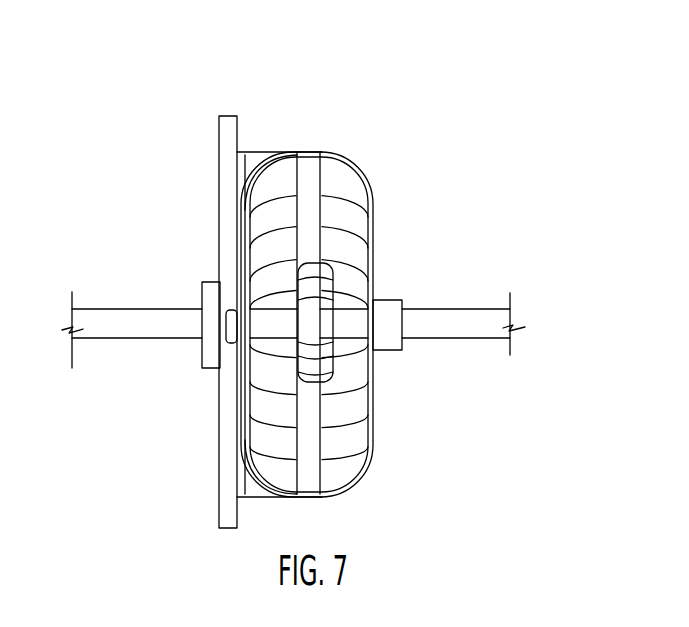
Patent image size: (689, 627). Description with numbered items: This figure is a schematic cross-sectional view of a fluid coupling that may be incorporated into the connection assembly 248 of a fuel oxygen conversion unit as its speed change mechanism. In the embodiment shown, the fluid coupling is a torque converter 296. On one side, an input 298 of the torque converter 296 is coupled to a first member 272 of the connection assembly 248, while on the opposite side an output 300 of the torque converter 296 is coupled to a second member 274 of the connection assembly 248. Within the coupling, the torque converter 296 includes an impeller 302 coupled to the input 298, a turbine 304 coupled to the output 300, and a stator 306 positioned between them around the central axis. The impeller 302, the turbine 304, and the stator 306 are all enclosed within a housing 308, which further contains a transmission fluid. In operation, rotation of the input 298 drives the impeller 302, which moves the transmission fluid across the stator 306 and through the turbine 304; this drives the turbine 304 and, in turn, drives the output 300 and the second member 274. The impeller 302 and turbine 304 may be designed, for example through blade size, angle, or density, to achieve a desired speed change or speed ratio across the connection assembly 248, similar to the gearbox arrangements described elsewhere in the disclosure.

The connection assembly 248 is at (217, 68).
The torque converter 296 is at (385, 105).
The housing 308 is at (264, 152).
The impeller 302 is at (352, 250).
The turbine 304 is at (268, 376).
The stator 306 is at (312, 346).
The second member 274 is at (127, 334).
The output 300 is at (212, 296).
The input 298 is at (388, 310).
The first member 272 is at (450, 320).